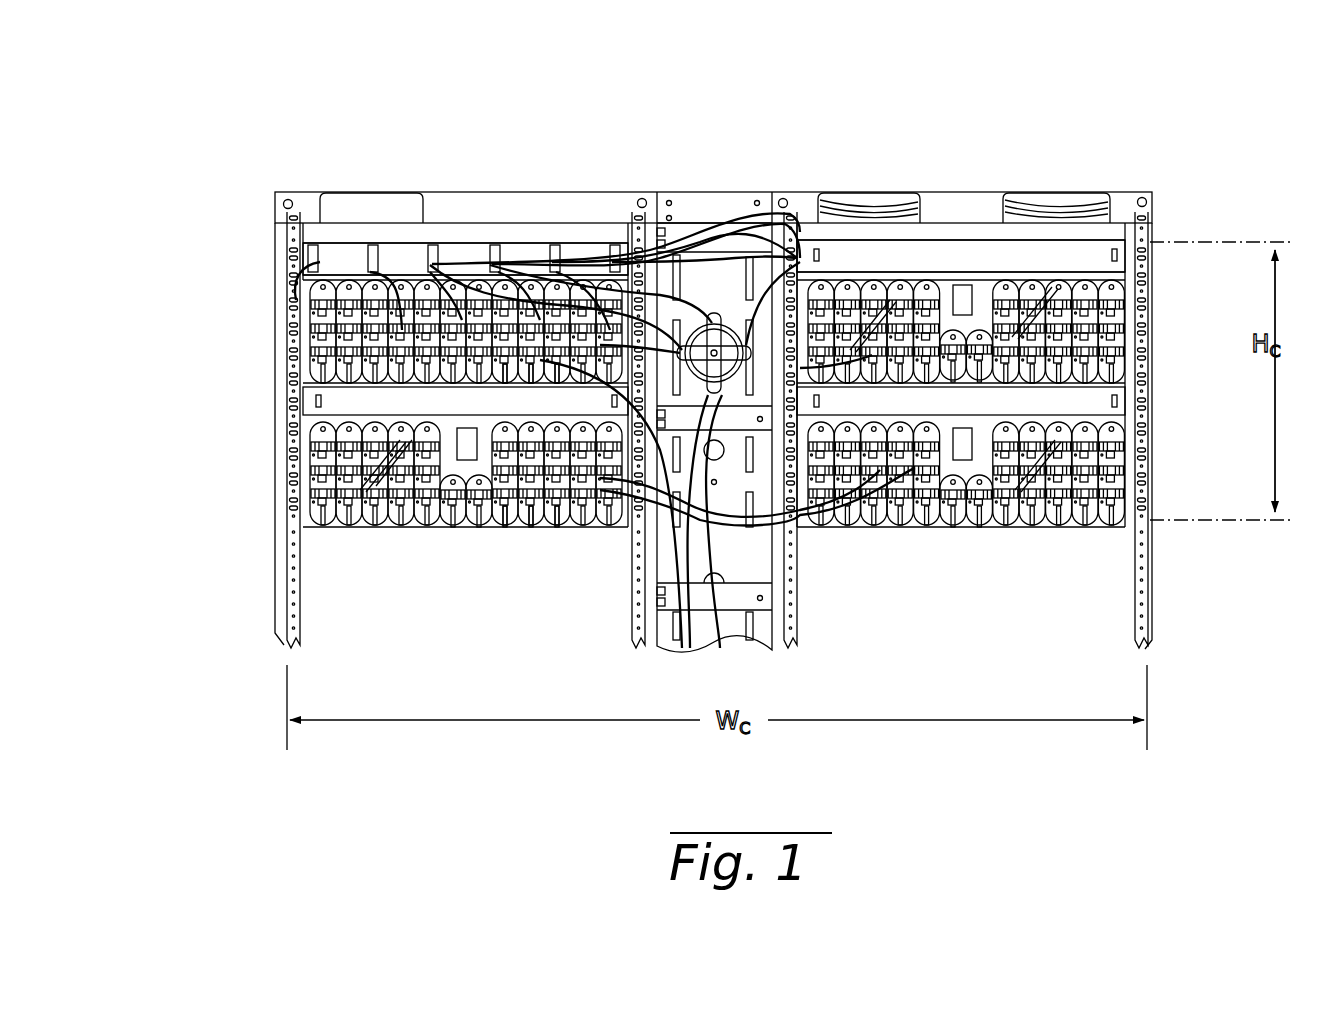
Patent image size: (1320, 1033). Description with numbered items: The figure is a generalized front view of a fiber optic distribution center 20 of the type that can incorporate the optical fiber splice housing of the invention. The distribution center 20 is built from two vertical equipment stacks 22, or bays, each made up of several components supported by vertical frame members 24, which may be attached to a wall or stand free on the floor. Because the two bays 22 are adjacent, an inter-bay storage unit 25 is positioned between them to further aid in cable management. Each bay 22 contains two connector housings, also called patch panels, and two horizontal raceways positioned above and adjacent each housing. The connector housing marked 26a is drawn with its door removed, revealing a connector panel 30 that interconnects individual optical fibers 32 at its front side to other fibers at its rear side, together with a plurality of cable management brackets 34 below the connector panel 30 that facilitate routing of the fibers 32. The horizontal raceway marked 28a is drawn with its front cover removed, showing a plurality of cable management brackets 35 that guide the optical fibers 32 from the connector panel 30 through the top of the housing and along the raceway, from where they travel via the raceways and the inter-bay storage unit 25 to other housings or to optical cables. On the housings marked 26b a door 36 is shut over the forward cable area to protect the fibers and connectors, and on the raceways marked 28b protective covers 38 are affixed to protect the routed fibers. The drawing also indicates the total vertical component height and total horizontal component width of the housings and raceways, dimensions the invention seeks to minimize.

The fiber optic distribution center 20 is at (818, 80).
The vertical equipment stack 22 is at (378, 168).
The vertical frame member 24 is at (285, 570).
The inter-bay storage unit 25 is at (690, 188).
The connector panel housing 26a is at (285, 318).
The connector housing 26b is at (285, 478).
The horizontal raceway 28a is at (285, 265).
The horizontal raceway 28b is at (285, 400).
The connector panel 30 is at (322, 345).
The optical fibers 32 is at (580, 262).
The cable management bracket 34 is at (557, 385).
The cable management bracket 35 is at (412, 246).
The door 36 is at (378, 462).
The protective cover 38 is at (322, 399).